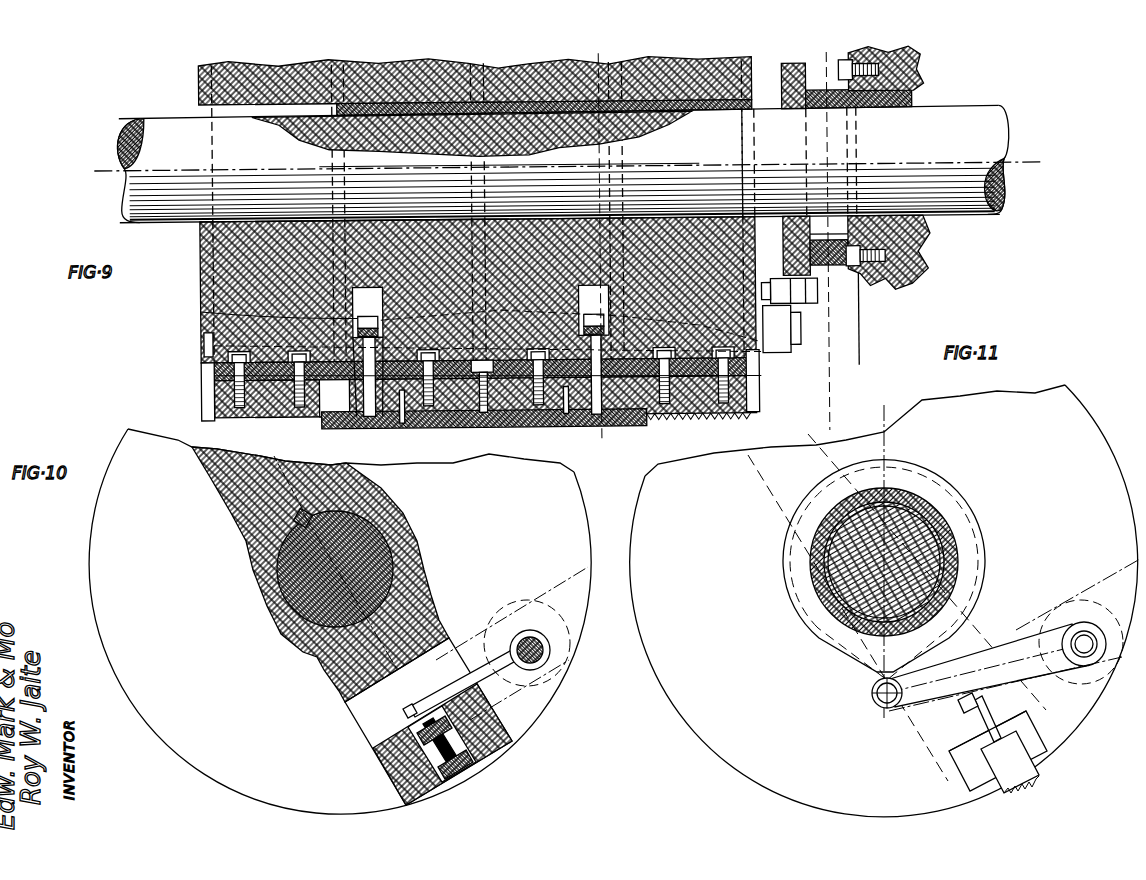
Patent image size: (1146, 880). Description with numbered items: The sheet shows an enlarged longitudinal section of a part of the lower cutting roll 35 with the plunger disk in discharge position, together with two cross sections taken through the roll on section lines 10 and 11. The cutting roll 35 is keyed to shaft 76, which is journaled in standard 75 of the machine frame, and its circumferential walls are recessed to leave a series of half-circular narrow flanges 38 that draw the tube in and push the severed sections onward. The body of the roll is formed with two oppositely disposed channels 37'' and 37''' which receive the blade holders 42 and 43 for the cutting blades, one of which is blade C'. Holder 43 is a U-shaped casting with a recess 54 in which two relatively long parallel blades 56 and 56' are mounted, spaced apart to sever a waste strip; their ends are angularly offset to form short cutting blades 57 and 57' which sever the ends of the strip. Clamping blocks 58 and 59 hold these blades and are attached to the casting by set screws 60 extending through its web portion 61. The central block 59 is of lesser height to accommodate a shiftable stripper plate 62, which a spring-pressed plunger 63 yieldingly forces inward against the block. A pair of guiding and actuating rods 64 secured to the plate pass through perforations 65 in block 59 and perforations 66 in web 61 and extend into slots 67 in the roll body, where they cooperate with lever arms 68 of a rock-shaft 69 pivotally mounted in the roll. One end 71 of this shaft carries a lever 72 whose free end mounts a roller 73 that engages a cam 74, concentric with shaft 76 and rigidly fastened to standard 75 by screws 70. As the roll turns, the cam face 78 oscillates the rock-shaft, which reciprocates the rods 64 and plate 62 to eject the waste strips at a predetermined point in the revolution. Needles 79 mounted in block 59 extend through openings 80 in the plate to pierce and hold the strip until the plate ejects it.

In FIG. 9, the cutting roll 35 is at (213, 276).
In FIG. 9, the channel 37'' is at (459, 383).
In FIG. 10, the channel 37''' is at (392, 724).
In FIG. 11, the channel 37''' is at (959, 749).
In FIG. 10, the half-circular narrow flanges 38 is at (340, 621).
In FIG. 11, the half-circular narrow flanges 38 is at (884, 601).
In FIG. 11, the blade holder 42 is at (976, 785).
In FIG. 9, the blade holder 43 is at (750, 372).
In FIG. 10, the blade holder 43 is at (487, 744).
In FIG. 10, the recess 54 is at (421, 800).
In FIG. 9, the cutting blade 56 is at (699, 430).
In FIG. 10, the cutting blade 56 is at (434, 765).
In FIG. 10, the cutting blade 56' is at (516, 785).
In FIG. 9, the short cutting blade 57 is at (510, 397).
In FIG. 11, the short cutting blade 57 is at (998, 758).
In FIG. 9, the short cutting blade 57' is at (642, 438).
In FIG. 9, the clamping block 58 is at (215, 405).
In FIG. 9, the clamping block 59 is at (488, 418).
In FIG. 10, the clamping block 59 is at (458, 785).
In FIG. 9, the set screws 60 is at (240, 418).
In FIG. 9, the web portion 61 is at (786, 381).
In FIG. 9, the stripper plate 62 is at (430, 420).
In FIG. 10, the stripper plate 62 is at (473, 778).
In FIG. 9, the spring-pressed plunger 63 is at (478, 418).
In FIG. 10, the spring-pressed plunger 63 is at (478, 762).
In FIG. 9, the guiding and actuating rods 64 is at (353, 420).
In FIG. 9, the perforations 65 is at (368, 420).
In FIG. 9, the perforations 66 is at (213, 367).
In FIG. 9, the slots 67 is at (480, 311).
In FIG. 10, the slots 67 is at (352, 710).
In FIG. 9, the lever arms 68 is at (812, 376).
In FIG. 10, the lever arms 68 is at (445, 694).
In FIG. 9, the rock-shaft 69 is at (203, 345).
In FIG. 10, the rock-shaft 69 is at (545, 635).
In FIG. 9, the screws 70 is at (846, 273).
In FIG. 9, the end of shaft 71 is at (792, 345).
In FIG. 11, the end of shaft 71 is at (1102, 628).
In FIG. 9, the lever 72 is at (802, 326).
In FIG. 11, the lever 72 is at (1000, 646).
In FIG. 9, the roller 73 is at (820, 305).
In FIG. 11, the roller 73 is at (885, 710).
In FIG. 9, the cam 74 is at (792, 250).
In FIG. 11, the cam 74 is at (987, 545).
In FIG. 9, the standard 75 is at (926, 257).
In FIG. 9, the shaft 76 is at (569, 164).
In FIG. 10, the shaft 76 is at (312, 590).
In FIG. 11, the shaft 76 is at (922, 528).
In FIG. 11, the cam face 78 is at (872, 685).
In FIG. 9, the needles or pins 79 is at (405, 428).
In FIG. 9, the openings 80 is at (400, 426).
In FIG. 10, the cutting blade C' is at (512, 647).
In FIG. 11, the cutting blade C' is at (1078, 665).
In FIG. 9, the section line 10 is at (600, 57).
In FIG. 9, the section line 11 is at (828, 58).